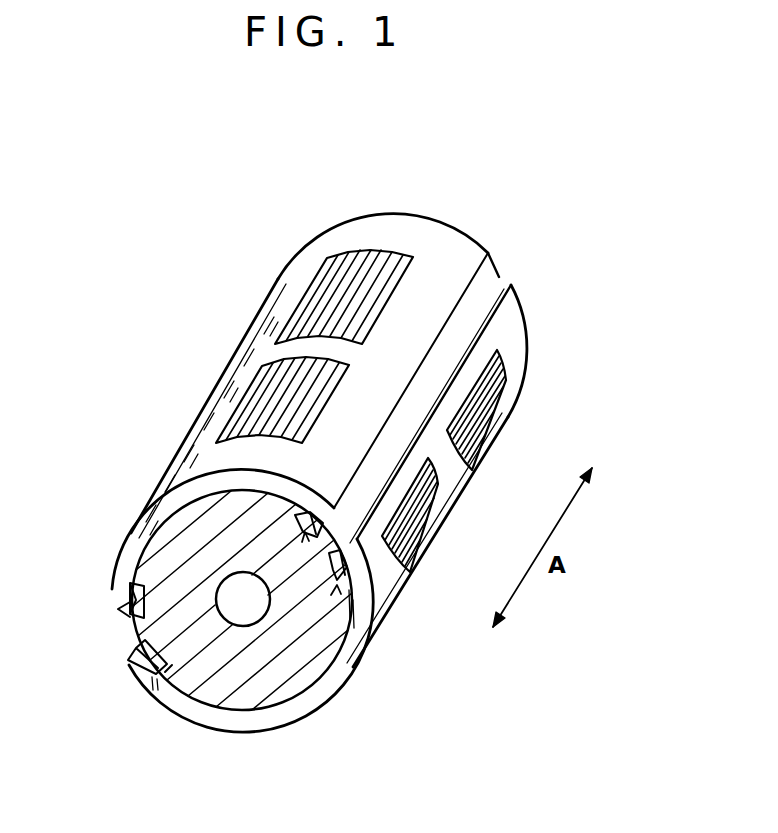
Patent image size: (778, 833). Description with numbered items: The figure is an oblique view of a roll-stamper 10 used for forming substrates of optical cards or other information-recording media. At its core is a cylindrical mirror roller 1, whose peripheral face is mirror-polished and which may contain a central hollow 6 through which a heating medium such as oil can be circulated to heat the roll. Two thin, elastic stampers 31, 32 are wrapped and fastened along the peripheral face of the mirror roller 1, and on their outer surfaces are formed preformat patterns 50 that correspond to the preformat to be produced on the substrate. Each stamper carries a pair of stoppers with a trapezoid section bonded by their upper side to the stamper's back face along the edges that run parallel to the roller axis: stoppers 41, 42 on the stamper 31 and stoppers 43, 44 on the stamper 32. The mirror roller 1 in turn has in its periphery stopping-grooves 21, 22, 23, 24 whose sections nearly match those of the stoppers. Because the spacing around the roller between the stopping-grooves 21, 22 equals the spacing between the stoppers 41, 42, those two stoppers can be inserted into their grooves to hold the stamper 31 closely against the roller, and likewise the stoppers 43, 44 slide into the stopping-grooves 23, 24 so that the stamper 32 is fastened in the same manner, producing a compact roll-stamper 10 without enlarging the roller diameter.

The mirror roller 1 is at (357, 451).
The roll-stamper 10 is at (173, 402).
The hollow 6 is at (246, 624).
The stamper 31 is at (430, 233).
The stamper 32 is at (498, 279).
The preformat patterns 50 is at (268, 384).
The stopper 41 is at (128, 616).
The stopper 42 is at (350, 552).
The stopper 43 is at (358, 598).
The stopper 44 is at (150, 665).
The stopping-groove 21 is at (122, 590).
The stopping-groove 22 is at (305, 543).
The stopping-groove 23 is at (338, 583).
The stopping-groove 24 is at (176, 662).